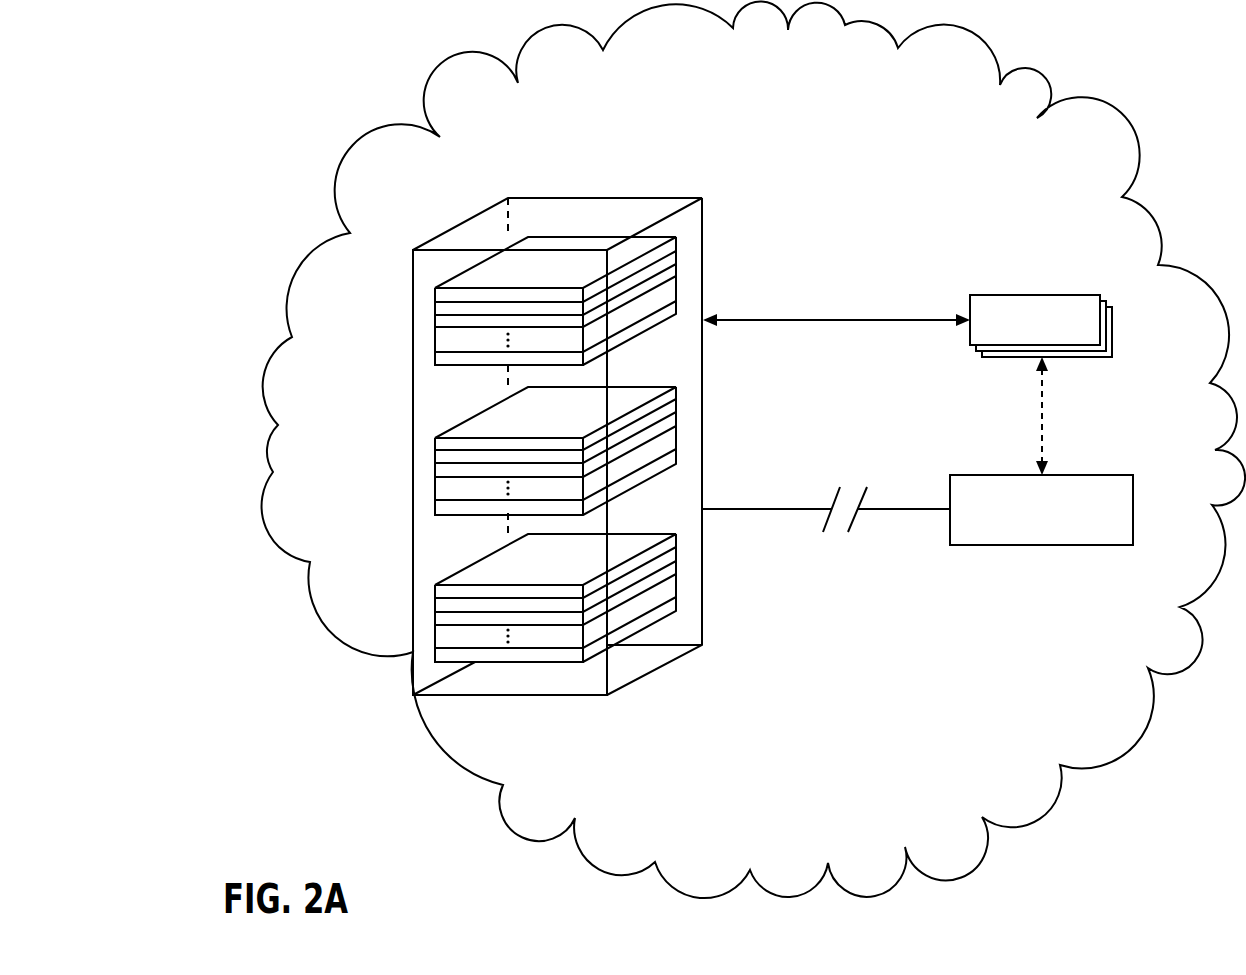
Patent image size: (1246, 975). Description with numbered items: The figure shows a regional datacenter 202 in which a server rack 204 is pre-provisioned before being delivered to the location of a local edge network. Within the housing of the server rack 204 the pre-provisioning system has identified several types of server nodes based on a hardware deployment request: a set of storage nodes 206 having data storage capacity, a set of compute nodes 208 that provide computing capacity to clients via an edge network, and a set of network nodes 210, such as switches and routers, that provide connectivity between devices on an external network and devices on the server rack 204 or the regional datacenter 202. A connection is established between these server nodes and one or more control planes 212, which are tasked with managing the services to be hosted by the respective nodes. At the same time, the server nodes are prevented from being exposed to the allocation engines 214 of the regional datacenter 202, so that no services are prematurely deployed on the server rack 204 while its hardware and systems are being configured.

The regional datacenter 202 is at (754, 449).
The server rack 204 is at (460, 224).
The set of storage nodes 206 is at (683, 534).
The set of compute nodes 208 is at (683, 387).
The set of network nodes 210 is at (683, 237).
The control planes 212 is at (1118, 293).
The allocation engines 214 is at (1041, 510).